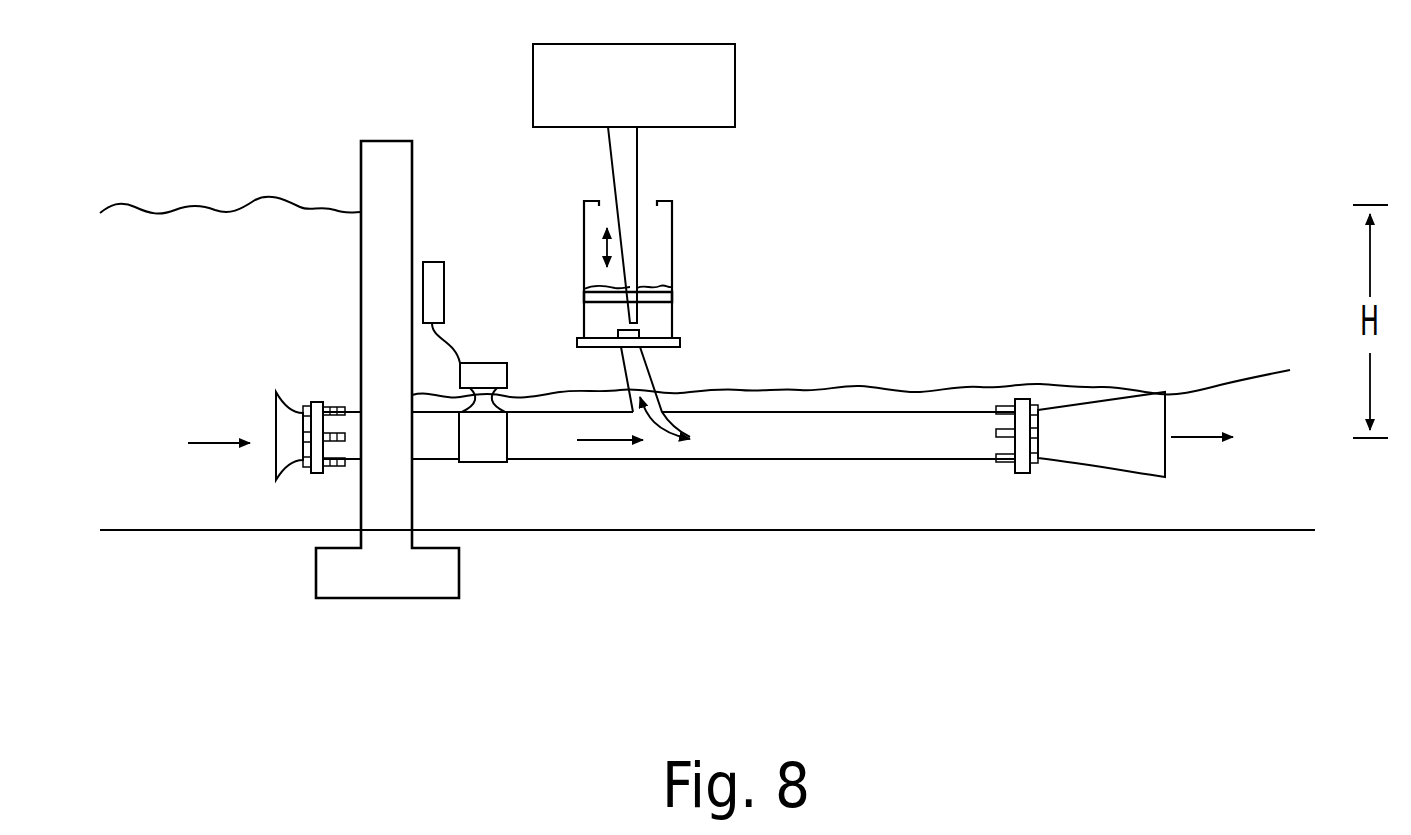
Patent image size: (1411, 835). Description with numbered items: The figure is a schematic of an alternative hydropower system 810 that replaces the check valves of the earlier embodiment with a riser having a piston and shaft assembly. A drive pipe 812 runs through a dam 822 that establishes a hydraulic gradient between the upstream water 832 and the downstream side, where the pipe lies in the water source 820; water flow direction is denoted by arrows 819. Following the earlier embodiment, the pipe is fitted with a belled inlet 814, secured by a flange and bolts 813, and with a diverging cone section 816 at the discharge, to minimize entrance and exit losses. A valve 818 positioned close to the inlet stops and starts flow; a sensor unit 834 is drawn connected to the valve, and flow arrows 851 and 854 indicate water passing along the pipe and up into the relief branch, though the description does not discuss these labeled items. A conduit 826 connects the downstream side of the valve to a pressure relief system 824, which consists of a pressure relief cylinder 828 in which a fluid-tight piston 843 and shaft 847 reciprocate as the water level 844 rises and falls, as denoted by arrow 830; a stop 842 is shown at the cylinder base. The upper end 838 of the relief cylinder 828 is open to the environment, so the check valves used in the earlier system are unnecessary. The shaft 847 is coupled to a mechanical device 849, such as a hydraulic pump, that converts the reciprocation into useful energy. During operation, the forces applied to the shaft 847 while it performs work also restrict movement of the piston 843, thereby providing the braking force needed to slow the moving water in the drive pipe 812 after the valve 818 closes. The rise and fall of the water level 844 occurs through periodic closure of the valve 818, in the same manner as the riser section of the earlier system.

The hydropower system 810 is at (938, 480).
The drive pipe 812 is at (333, 400).
The bolts 813 is at (298, 463).
The belled inlet 814 is at (276, 423).
The diverging cone section 816 is at (1115, 478).
The valve 818 is at (480, 452).
The water flow direction arrows 819 is at (215, 447).
The water source 820 is at (256, 170).
The dam 822 is at (412, 177).
The pressure relief system 824 is at (712, 366).
The conduit 826 is at (618, 380).
The pressure relief cylinder 828 is at (567, 328).
The arrow 830 is at (605, 250).
The upstream reservoir 832 is at (197, 298).
The sensor / controller 834 is at (445, 285).
The upper end 838 is at (657, 210).
The stop block 842 is at (665, 329).
The piston 843 is at (668, 298).
The water level 844 is at (605, 310).
The shaft 847 is at (637, 268).
The mechanical device 849 is at (735, 92).
The flow arrow into tube 851 is at (672, 432).
The flow arrow in conduit 854 is at (597, 444).